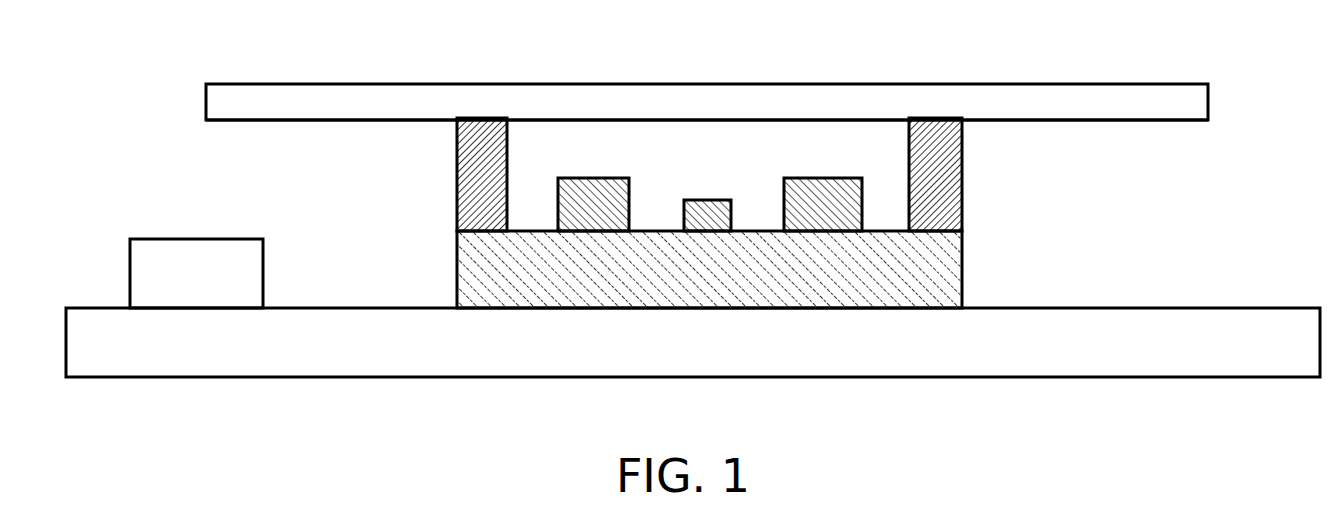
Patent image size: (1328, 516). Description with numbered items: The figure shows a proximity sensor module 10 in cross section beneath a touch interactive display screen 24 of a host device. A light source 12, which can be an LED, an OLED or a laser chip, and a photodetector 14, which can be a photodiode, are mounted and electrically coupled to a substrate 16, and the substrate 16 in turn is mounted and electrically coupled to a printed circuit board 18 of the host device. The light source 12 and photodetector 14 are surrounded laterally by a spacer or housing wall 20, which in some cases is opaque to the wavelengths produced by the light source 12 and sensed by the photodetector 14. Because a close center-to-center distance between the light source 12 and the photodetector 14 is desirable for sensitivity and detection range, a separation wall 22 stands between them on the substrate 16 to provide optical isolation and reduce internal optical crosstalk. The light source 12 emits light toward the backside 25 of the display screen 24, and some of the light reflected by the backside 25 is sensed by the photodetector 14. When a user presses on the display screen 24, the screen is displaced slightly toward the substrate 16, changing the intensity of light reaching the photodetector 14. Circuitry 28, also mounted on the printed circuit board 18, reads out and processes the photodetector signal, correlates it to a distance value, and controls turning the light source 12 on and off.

The proximity sensor module 10 is at (1145, 198).
The light source 12 is at (557, 192).
The photodetector 14 is at (849, 178).
The substrate 16 is at (962, 270).
The printed circuit board 18 is at (1255, 372).
The spacer or housing wall 20 is at (457, 193).
The separation wall 22 is at (712, 199).
The touch interactive display screen 24 is at (797, 97).
The backside of display screen 25 is at (663, 123).
The circuitry 28 is at (188, 289).